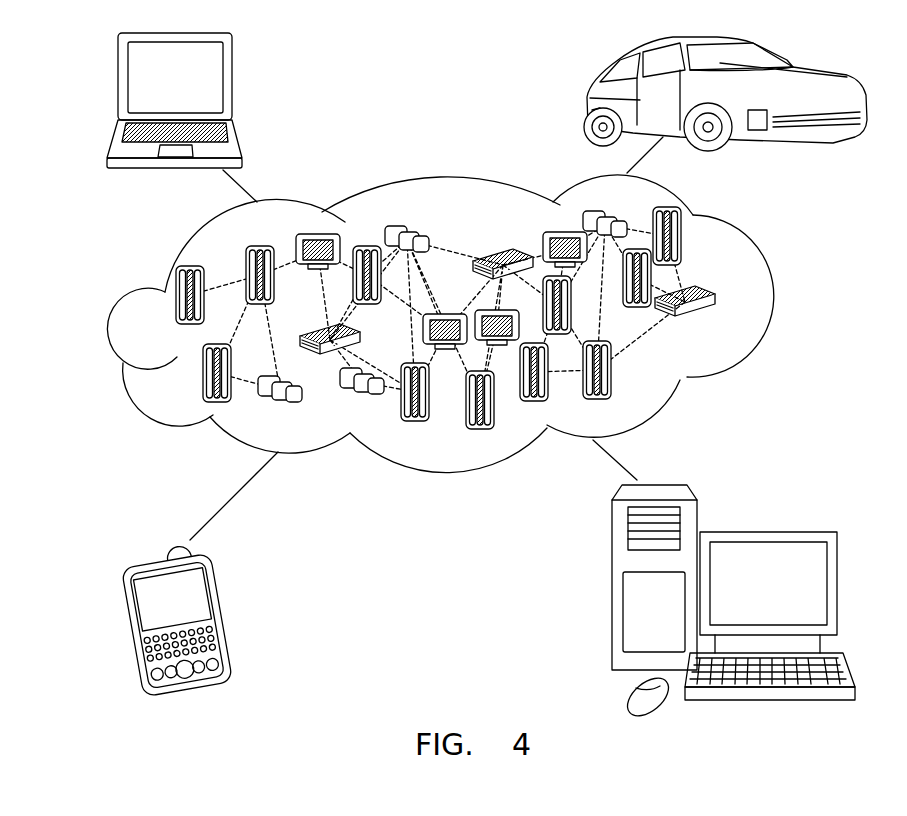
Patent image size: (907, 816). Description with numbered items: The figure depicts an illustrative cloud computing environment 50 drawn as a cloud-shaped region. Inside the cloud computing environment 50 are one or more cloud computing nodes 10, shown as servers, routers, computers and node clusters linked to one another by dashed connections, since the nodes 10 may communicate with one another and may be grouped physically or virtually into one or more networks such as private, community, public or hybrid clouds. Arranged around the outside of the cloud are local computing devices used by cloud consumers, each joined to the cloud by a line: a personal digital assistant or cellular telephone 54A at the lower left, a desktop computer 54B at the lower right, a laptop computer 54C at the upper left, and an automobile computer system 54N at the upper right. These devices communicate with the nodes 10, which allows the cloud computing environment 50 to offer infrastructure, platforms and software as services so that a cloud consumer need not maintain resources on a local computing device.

The cloud computing nodes 10 is at (724, 329).
The cloud computing environment 50 is at (768, 303).
The personal digital assistant or cellular telephone 54A is at (223, 607).
The desktop computer 54B is at (767, 532).
The laptop computer 54C is at (232, 85).
The automobile computer system 54N is at (588, 98).